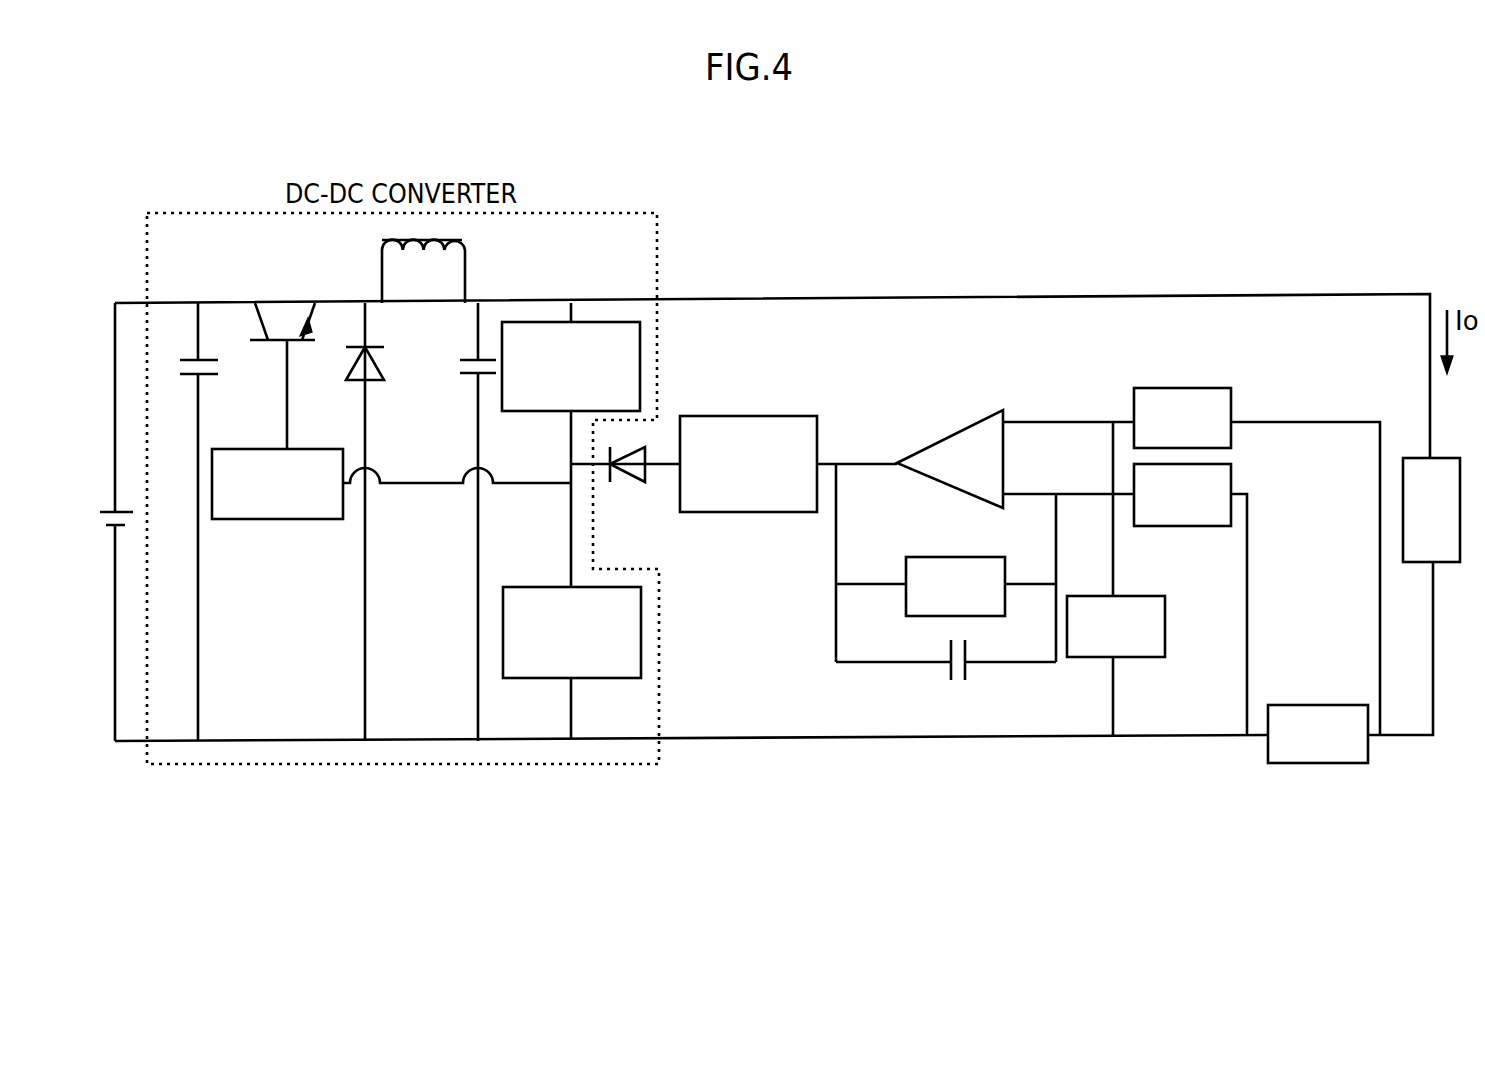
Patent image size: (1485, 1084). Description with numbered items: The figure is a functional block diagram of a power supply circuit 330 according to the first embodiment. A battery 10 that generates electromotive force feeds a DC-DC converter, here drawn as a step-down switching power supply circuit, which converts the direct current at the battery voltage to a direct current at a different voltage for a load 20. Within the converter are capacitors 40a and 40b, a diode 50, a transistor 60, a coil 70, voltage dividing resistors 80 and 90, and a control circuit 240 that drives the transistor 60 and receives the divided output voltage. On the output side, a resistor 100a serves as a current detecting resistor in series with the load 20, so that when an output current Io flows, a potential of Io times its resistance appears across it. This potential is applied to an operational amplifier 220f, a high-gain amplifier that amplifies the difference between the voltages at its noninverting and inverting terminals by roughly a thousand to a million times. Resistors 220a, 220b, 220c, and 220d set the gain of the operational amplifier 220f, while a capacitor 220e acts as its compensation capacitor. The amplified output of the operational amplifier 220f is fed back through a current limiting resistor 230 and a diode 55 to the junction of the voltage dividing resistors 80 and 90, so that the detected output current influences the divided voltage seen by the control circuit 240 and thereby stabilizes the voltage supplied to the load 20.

The battery 10 is at (118, 508).
The load 20 is at (1412, 458).
The capacitor 40a is at (190, 364).
The capacitor 40b is at (466, 356).
The diode 50 is at (380, 360).
The diode 55 is at (626, 478).
The transistor 60 is at (306, 322).
The coil 70 is at (465, 268).
The voltage dividing resistor 80 is at (641, 368).
The voltage dividing resistor 90 is at (642, 610).
The resistor 100a is at (1300, 705).
The resistor 220a is at (970, 556).
The resistor 220b is at (1166, 628).
The resistor 220c is at (1231, 404).
The resistor 220d is at (1231, 481).
The capacitor 220e is at (968, 672).
The operational amplifier 220f is at (957, 433).
The current limiting resistor 230 is at (764, 416).
The control circuit 240 is at (300, 449).
The power supply circuit 330 is at (1145, 247).